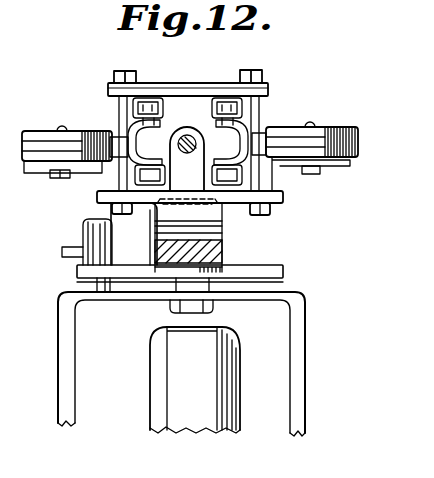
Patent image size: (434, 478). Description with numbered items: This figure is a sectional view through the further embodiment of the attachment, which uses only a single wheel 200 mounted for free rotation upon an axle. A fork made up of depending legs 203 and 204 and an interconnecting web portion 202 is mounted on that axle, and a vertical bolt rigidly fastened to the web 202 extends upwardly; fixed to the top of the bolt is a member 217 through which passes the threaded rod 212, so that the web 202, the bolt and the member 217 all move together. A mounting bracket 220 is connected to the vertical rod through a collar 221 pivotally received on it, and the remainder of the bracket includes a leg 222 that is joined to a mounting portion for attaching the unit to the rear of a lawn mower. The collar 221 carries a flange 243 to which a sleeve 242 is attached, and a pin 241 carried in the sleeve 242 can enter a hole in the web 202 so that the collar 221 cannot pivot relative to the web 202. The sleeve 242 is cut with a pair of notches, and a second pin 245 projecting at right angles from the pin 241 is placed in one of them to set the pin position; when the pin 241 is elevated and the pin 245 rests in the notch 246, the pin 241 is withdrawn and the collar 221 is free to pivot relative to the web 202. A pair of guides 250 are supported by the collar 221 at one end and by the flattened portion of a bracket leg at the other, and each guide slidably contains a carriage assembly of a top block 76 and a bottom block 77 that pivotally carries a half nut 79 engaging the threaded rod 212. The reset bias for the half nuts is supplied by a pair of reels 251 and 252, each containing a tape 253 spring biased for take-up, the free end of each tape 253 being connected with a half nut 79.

The top block 76 is at (150, 104).
The bottom block 77 is at (143, 203).
The half nut 79 is at (140, 144).
The wheel 200 is at (152, 393).
The web portion 202 is at (248, 292).
The depending leg 203 is at (306, 389).
The depending leg 204 is at (58, 377).
The threaded rod 212 is at (187, 135).
The member 217 is at (205, 137).
The mounting bracket 220 is at (231, 265).
The collar 221 is at (155, 238).
The leg 222 is at (218, 250).
The pin 241 is at (95, 280).
The sleeve 242 is at (90, 260).
The flange 243 is at (129, 282).
The second pin 245 is at (64, 248).
The notch 246 is at (105, 236).
The guides 250 is at (150, 97).
The reel 251 is at (30, 131).
The reel 252 is at (338, 126).
The tape 253 is at (118, 137).